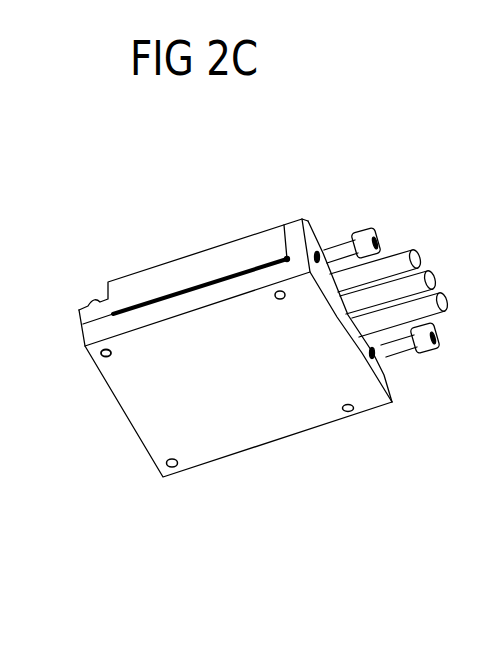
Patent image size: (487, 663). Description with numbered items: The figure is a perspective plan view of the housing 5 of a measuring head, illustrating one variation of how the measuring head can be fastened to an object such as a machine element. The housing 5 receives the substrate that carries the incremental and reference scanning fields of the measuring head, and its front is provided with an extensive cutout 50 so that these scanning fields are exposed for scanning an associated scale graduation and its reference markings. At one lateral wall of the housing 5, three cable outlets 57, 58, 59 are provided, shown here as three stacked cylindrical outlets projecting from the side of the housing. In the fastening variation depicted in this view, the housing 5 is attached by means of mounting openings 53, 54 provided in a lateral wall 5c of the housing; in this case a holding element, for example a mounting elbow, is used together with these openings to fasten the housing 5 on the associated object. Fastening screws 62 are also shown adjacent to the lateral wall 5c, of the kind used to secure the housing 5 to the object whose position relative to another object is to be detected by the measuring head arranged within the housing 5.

The housing 5 is at (163, 477).
The lateral wall 5c is at (383, 373).
The extensive cutout 50 is at (133, 288).
The mounting opening 53 is at (321, 250).
The mounting opening 54 is at (371, 360).
The cable outlet 57 is at (400, 262).
The cable outlet 58 is at (417, 287).
The cable outlet 59 is at (442, 312).
The fastening screw 62 is at (366, 238).